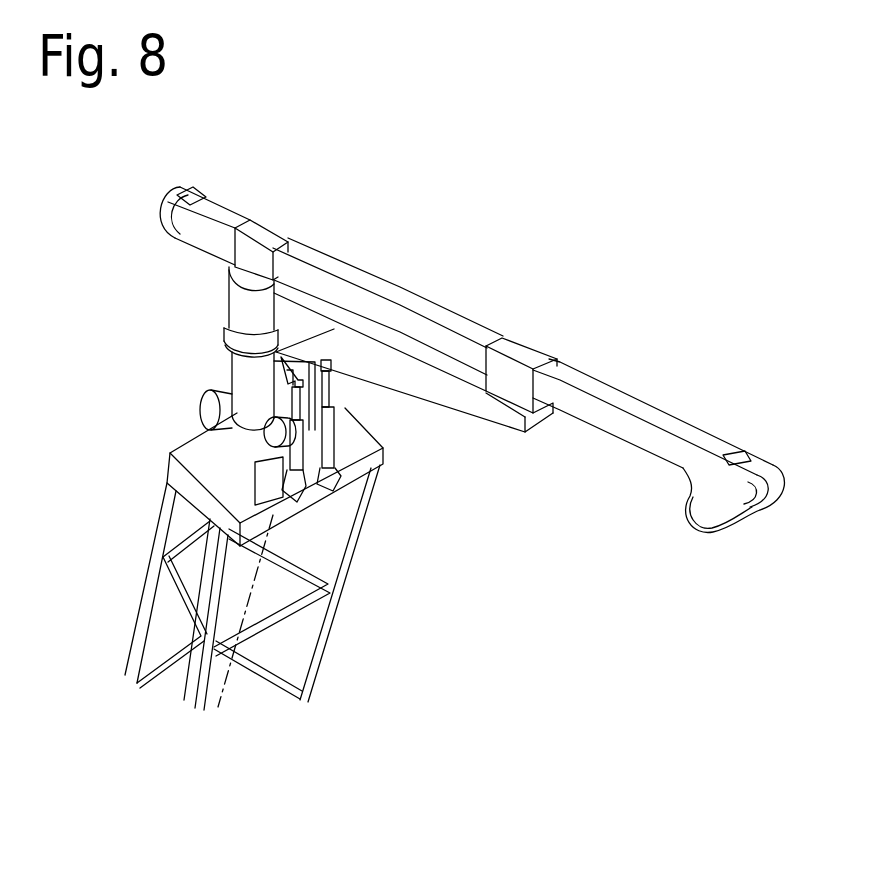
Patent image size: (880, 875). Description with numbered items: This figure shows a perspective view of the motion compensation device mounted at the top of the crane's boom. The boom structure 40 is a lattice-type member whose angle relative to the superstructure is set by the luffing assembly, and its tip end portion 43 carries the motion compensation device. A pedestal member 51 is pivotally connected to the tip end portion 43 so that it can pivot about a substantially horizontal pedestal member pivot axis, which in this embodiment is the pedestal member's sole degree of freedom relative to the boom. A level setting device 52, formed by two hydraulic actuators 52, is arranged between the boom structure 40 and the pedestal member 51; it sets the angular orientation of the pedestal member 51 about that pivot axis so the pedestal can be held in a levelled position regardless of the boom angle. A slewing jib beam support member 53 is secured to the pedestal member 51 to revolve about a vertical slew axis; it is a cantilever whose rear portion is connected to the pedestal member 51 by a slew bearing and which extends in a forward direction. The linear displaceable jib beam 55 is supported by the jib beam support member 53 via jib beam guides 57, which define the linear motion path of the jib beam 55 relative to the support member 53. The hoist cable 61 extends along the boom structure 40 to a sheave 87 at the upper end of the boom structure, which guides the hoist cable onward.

The boom structure 40 is at (223, 559).
The tip end portion 43 is at (158, 545).
The pedestal member 51 is at (250, 373).
The level setting device 52 is at (331, 441).
The slewing jib beam support member 53 is at (470, 402).
The linear displaceable jib beam 55 is at (637, 408).
The jib beam guides 57 is at (250, 222).
The hoist cable 61 is at (222, 683).
The sheave 87 is at (276, 436).